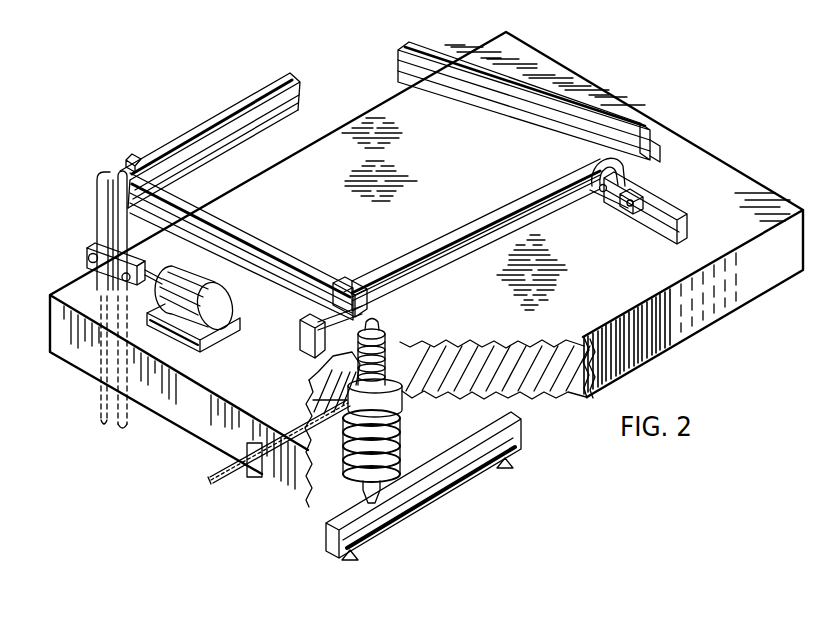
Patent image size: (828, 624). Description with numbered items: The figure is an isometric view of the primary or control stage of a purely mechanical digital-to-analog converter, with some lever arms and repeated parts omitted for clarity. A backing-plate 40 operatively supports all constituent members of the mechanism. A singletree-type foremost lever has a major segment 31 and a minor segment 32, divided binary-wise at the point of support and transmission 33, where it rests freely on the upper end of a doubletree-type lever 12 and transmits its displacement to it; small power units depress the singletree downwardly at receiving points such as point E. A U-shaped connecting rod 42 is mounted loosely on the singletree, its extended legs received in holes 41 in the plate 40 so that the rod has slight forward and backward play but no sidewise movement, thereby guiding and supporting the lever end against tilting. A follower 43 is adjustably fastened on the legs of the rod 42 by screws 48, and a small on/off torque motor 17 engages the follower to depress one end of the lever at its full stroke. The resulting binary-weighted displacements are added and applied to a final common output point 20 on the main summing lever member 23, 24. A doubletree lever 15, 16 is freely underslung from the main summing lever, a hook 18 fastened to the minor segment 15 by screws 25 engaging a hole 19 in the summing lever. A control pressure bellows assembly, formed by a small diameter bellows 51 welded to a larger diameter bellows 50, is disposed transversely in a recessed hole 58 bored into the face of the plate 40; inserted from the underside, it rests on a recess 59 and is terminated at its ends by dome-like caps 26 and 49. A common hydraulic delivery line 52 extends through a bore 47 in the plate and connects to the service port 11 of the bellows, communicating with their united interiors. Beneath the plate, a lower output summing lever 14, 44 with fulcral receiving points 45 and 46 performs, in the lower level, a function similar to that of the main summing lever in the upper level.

The service port 11 is at (333, 377).
The doubletree-type lever 12 is at (298, 257).
The lower output summing lever 14 is at (363, 540).
The minor segment of doubletree lever 15 is at (655, 184).
The doubletree lever 16 is at (470, 106).
The torque motor 17 is at (188, 280).
The hook 18 is at (658, 190).
The hole 19 is at (591, 190).
The final common output point 20 is at (380, 316).
The main summing lever member 23 is at (313, 310).
The main summing lever member 24 is at (506, 206).
The screws 25 is at (621, 204).
The dome-like cap 26 is at (387, 326).
The major segment of singletree lever 31 is at (268, 112).
The minor segment of singletree lever 32 is at (160, 156).
The point of support and transmission 33 is at (180, 178).
The backing-plate 40 is at (730, 216).
The holes 41 is at (95, 292).
The U-shaped connecting rod 42 is at (112, 172).
The follower 43 is at (92, 245).
The lower output summing lever 44 is at (463, 488).
The fulcral receiving point 45 is at (345, 562).
The fulcral receiving point 46 is at (506, 470).
The bore 47 is at (252, 478).
The screws 48 is at (88, 258).
The dome-like cap 49 is at (373, 494).
The larger diameter bellows 50 is at (398, 462).
The small diameter bellows 51 is at (335, 285).
The common hydraulic delivery line 52 is at (212, 483).
The recessed hole 58 is at (403, 385).
The recess 59 is at (400, 398).
The receiving point E is at (280, 72).